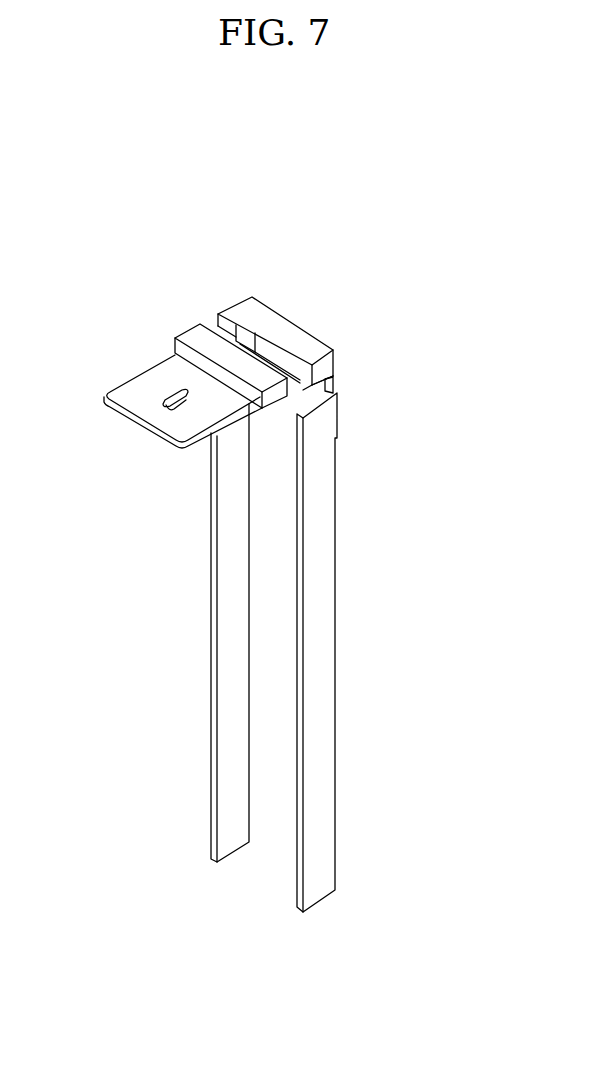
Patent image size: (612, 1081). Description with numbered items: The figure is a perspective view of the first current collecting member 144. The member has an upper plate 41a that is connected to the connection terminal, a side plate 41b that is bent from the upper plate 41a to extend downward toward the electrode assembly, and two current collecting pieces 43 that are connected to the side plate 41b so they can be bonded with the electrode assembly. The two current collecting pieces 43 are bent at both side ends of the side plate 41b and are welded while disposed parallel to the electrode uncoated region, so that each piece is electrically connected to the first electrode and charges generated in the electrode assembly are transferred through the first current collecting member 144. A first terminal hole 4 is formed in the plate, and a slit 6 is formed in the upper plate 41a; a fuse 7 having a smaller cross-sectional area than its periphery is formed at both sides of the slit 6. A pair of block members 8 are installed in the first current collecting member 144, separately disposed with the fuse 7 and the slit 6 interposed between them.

The first current collecting member 144 is at (373, 215).
The block members 8 is at (241, 312).
The slit 6 is at (258, 345).
The first terminal hole 4 is at (167, 395).
The upper plate 41a is at (147, 383).
The side plate 41b is at (333, 383).
The fuse 7 is at (322, 378).
The current collecting pieces 43 is at (318, 662).